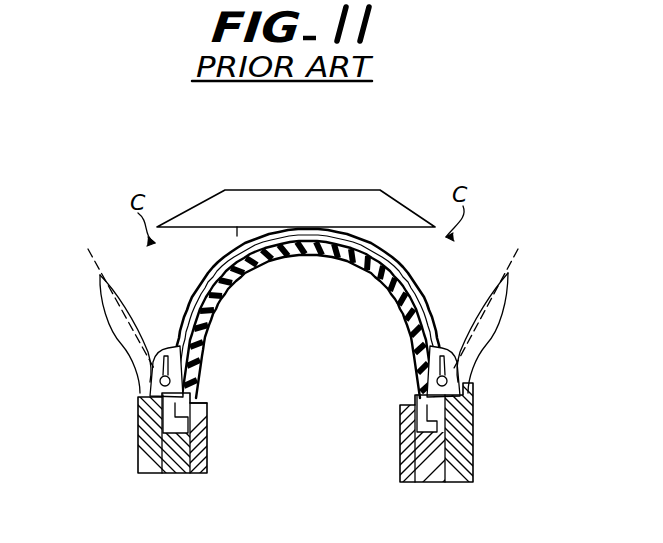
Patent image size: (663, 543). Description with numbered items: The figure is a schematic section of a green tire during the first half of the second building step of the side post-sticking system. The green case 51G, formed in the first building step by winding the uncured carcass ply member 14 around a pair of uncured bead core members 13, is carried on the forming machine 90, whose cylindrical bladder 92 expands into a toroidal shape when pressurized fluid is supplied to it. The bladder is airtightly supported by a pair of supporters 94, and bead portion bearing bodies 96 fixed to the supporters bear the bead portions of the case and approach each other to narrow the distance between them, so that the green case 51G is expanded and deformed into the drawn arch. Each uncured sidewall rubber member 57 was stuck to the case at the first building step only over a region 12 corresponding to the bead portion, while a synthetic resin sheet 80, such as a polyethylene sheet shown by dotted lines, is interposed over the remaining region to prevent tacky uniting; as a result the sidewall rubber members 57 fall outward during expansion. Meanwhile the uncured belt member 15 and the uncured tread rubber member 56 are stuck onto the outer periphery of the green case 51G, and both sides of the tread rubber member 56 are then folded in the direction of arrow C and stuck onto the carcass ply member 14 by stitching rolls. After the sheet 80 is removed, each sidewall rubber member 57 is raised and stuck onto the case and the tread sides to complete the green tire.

The uncured tread rubber member 56 is at (320, 197).
The uncured belt member 15 is at (370, 238).
The uncured radial carcass ply member 14 is at (195, 292).
The cylindrical bladder 92 is at (368, 272).
The green case 51G is at (416, 277).
The region corresponding to the bead portion 12 is at (152, 373).
The uncured bead core member 13 is at (458, 373).
The uncured sidewall rubber member 57 is at (117, 312).
The synthetic resin sheet 80 is at (103, 262).
The bead portion bearing body 96 is at (142, 445).
The supporter 94 is at (207, 443).
The forming machine 90 is at (398, 427).